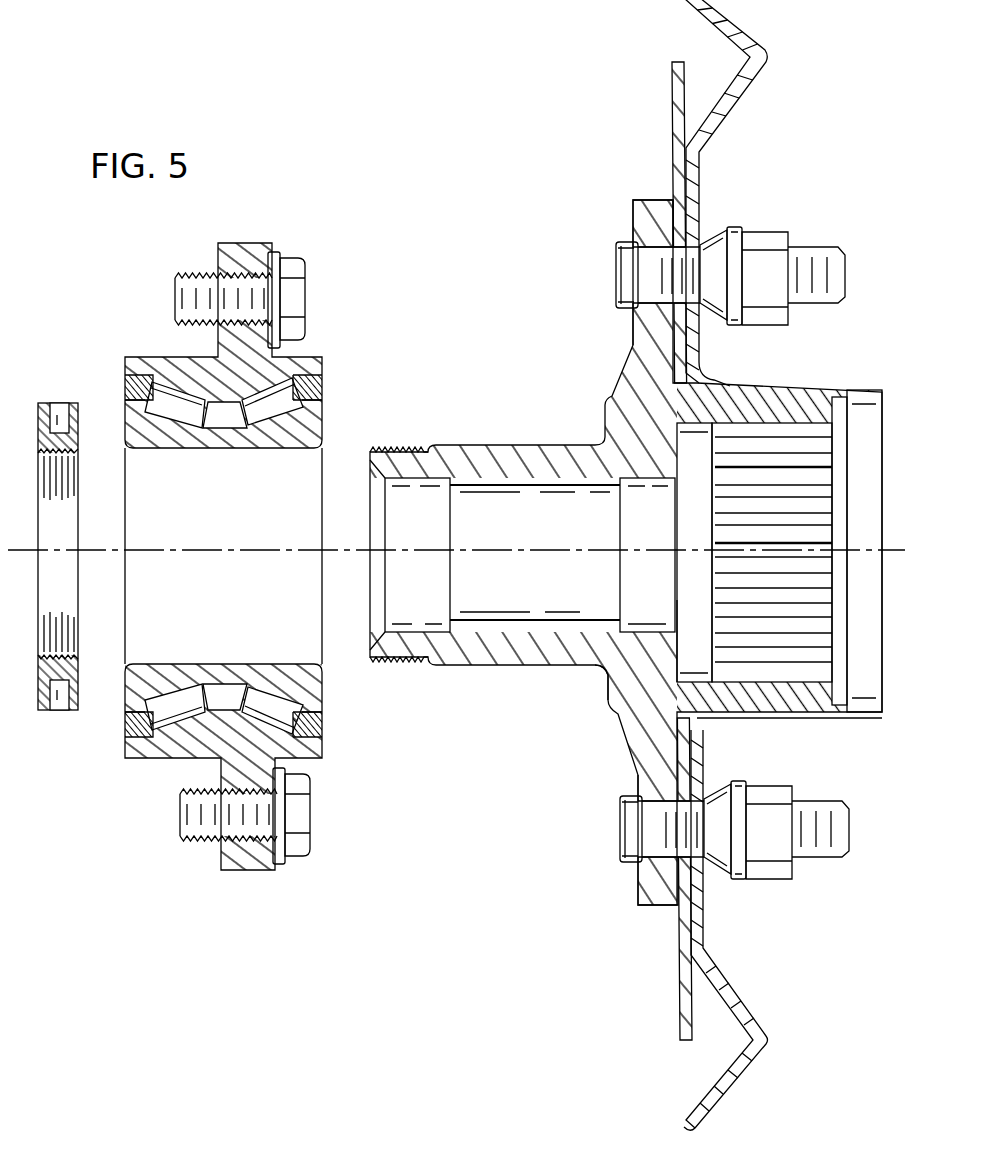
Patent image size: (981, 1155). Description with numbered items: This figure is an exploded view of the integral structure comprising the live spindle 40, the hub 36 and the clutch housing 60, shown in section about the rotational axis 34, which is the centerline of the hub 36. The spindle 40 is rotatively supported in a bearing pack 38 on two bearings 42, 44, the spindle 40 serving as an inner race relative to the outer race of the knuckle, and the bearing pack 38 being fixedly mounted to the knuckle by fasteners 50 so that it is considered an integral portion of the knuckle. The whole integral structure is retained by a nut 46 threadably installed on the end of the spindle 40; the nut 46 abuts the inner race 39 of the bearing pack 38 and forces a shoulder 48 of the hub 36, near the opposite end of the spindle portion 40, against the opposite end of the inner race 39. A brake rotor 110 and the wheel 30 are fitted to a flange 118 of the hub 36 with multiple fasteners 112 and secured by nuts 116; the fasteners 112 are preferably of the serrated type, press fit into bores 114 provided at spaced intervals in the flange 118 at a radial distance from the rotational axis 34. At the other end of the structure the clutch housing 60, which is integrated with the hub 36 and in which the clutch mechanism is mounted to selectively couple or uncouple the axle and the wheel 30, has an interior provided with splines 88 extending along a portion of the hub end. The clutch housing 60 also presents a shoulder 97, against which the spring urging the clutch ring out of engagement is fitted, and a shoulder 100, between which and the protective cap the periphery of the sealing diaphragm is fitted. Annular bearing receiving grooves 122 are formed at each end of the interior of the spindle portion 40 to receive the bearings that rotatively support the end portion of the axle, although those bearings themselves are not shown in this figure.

The wheel 30 is at (727, 24).
The rotational axis 34 is at (688, 545).
The hub 36 is at (614, 720).
The bearing pack 38 is at (162, 355).
The inner race 39 is at (130, 441).
The spindle 40 is at (506, 485).
The bearing 42 is at (178, 412).
The bearing 44 is at (263, 412).
The nut 46 is at (63, 712).
The shoulder 48 is at (601, 420).
The fasteners 50 is at (298, 297).
The clutch housing 60 is at (782, 718).
The splines 88 is at (765, 483).
The shoulder 97 is at (676, 652).
The shoulder 100 is at (848, 412).
The brake rotor 110 is at (672, 95).
The fasteners 112 is at (622, 255).
The bores 114 is at (652, 253).
The nuts 116 is at (760, 231).
The flange 118 is at (646, 200).
The annular bearing receiving grooves 122 is at (416, 478).